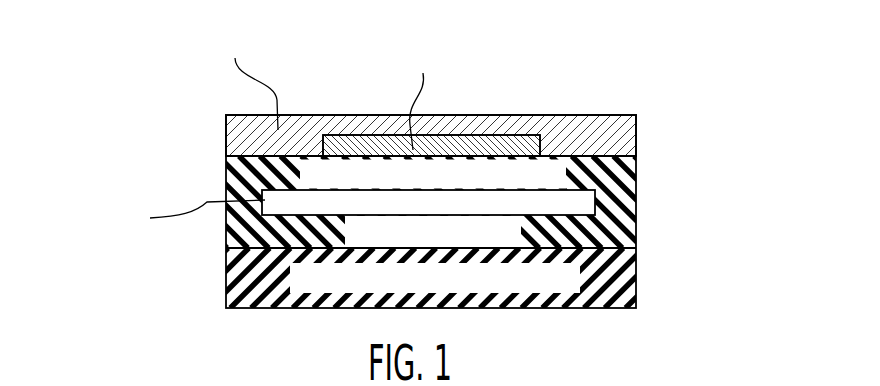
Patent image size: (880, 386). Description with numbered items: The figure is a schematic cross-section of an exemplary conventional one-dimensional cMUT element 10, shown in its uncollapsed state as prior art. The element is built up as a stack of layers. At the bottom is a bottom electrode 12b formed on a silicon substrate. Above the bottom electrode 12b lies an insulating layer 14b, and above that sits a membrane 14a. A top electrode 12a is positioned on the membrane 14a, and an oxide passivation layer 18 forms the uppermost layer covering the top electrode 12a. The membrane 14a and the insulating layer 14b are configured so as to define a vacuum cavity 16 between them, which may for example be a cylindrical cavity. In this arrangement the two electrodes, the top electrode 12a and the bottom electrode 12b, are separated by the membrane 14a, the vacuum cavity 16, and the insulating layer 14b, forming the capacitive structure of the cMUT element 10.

The cMUT element 10 is at (607, 88).
The oxide passivation layer 18 is at (626, 130).
The top electrode 12a is at (533, 149).
The membrane 14a is at (622, 177).
The vacuum cavity 16 is at (598, 203).
The insulating layer 14b is at (637, 238).
The bottom electrode 12b is at (637, 284).